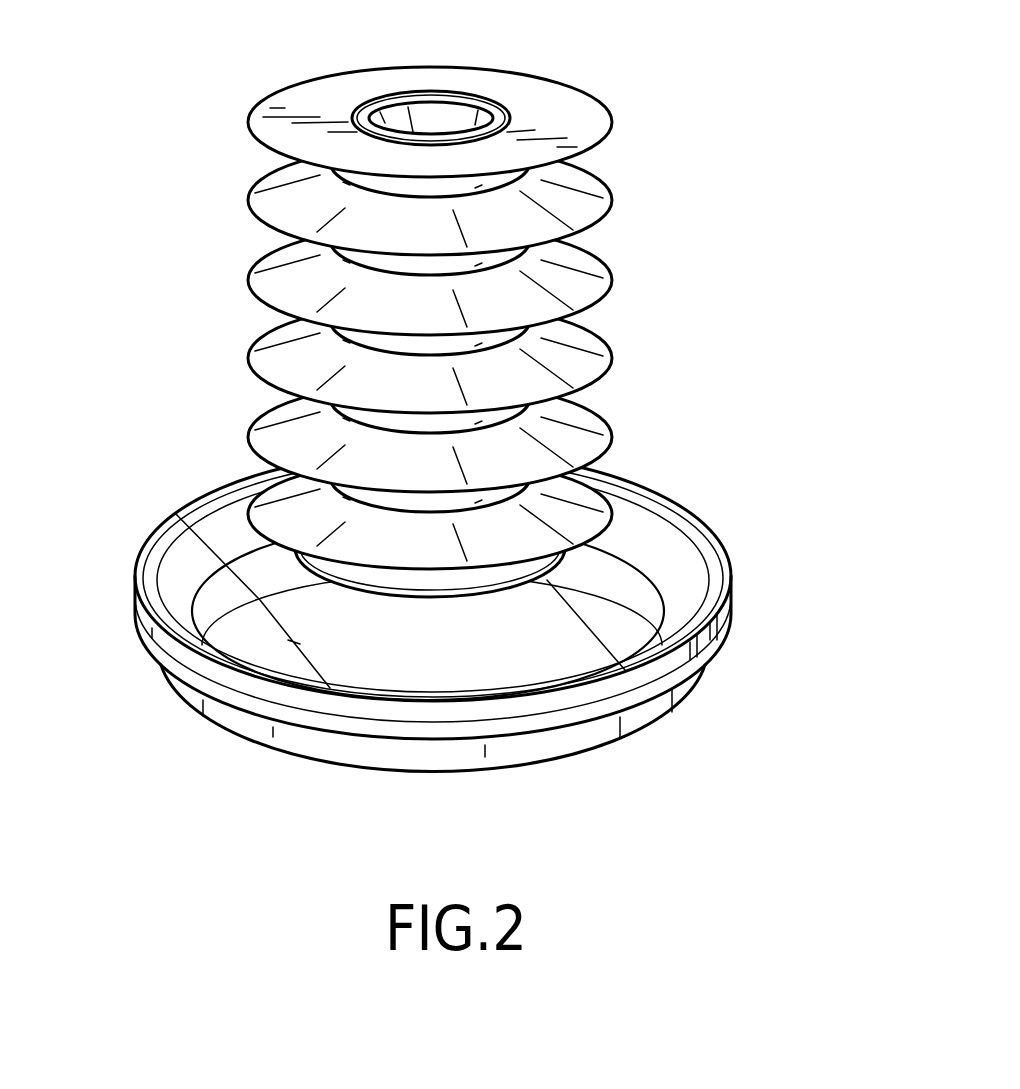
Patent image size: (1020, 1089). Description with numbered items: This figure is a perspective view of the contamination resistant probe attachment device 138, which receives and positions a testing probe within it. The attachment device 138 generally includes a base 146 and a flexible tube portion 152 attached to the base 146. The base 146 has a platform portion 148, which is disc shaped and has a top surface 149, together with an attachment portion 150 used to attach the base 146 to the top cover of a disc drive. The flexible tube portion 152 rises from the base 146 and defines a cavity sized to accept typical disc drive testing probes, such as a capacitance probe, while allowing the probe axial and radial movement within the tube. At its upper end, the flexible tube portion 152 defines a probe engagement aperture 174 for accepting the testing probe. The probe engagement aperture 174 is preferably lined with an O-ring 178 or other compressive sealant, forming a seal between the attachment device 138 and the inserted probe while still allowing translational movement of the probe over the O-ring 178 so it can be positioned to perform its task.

The attachment device 138 is at (570, 338).
The base 146 is at (452, 614).
The platform portion 148 is at (433, 595).
The top surface 149 is at (150, 556).
The attachment portion 150 is at (650, 712).
The flexible tube portion 152 is at (605, 276).
The probe engagement aperture 174 is at (443, 112).
The O-ring 178 is at (493, 106).